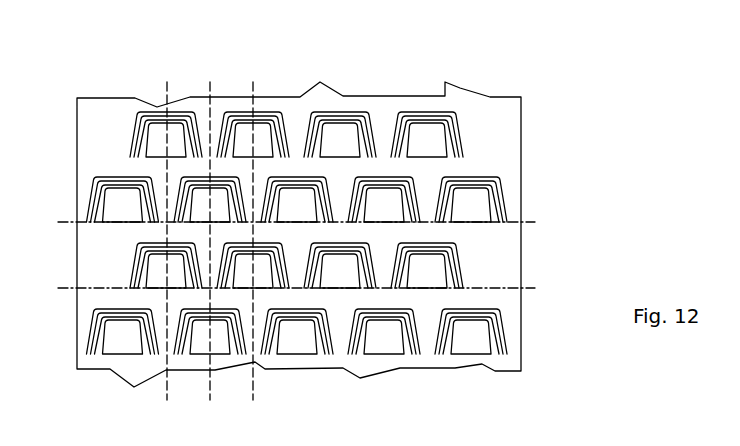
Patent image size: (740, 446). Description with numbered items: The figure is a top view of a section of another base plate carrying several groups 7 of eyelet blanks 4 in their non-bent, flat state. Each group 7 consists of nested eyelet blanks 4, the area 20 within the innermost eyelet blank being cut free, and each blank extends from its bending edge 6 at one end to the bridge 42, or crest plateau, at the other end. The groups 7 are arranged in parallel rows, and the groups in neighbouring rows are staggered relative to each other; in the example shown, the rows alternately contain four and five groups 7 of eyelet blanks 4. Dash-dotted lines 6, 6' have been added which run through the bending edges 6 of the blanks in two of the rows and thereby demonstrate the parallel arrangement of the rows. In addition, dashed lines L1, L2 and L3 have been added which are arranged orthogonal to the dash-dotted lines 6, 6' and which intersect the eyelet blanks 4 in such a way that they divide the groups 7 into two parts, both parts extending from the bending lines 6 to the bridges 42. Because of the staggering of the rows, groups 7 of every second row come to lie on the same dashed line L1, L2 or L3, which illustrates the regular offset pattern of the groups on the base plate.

The group of eyelet blanks 7 is at (85, 168).
The bridge 42 is at (480, 99).
The eyelet blank 4 is at (454, 118).
The area within the innermost eyelet blank 20 is at (384, 199).
The bending edge 6 is at (305, 222).
The bending edge line 6' is at (307, 288).
The dashed line L1 is at (165, 251).
The dashed line L2 is at (209, 251).
The dashed line L3 is at (253, 251).